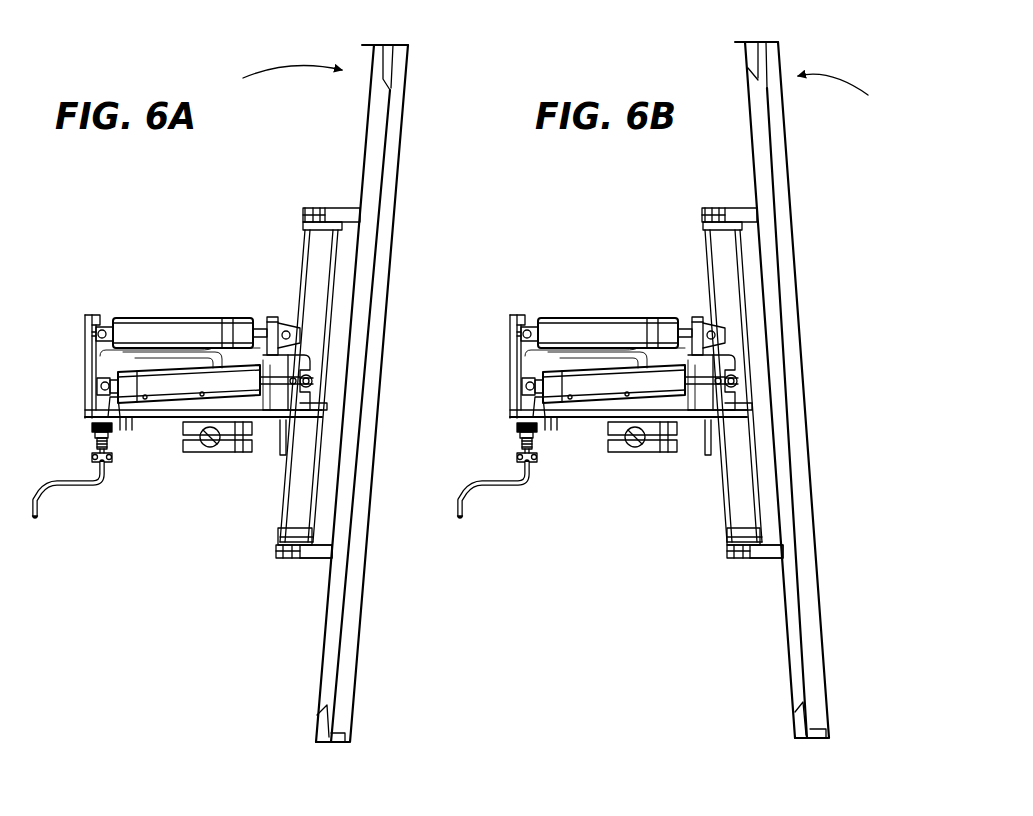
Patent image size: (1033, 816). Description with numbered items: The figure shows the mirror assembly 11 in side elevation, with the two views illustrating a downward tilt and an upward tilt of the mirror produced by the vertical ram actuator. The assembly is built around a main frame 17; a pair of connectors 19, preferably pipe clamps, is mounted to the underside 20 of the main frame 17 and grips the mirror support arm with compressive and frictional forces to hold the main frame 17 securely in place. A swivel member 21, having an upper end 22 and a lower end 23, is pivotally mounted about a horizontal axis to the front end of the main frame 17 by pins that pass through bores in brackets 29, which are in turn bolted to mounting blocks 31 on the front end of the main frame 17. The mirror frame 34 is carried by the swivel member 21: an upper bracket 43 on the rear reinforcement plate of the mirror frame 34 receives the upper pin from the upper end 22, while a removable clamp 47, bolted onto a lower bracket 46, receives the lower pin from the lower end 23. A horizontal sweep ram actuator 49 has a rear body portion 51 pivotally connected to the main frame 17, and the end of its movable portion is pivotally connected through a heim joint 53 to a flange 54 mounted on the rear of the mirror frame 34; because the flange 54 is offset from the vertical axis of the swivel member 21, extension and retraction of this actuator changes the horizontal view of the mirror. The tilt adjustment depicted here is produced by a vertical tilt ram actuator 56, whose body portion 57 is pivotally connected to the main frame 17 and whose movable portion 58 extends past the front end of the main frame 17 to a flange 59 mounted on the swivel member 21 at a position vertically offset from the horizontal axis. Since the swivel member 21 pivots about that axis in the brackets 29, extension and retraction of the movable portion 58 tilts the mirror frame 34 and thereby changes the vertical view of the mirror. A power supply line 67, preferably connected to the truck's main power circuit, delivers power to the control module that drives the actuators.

In FIG. 6A, the mirror assembly 11 is at (437, 60).
In FIG. 6B, the mirror assembly 11 is at (808, 213).
In FIG. 6A, the main frame 17 is at (83, 347).
In FIG. 6B, the main frame 17 is at (600, 366).
In FIG. 6A, the connectors 19 is at (205, 450).
In FIG. 6B, the connectors 19 is at (639, 463).
In FIG. 6A, the underside 20 is at (128, 421).
In FIG. 6B, the underside 20 is at (541, 446).
In FIG. 6A, the swivel member 21 is at (300, 250).
In FIG. 6B, the swivel member 21 is at (700, 250).
In FIG. 6A, the upper end 22 is at (302, 220).
In FIG. 6B, the upper end 22 is at (702, 220).
In FIG. 6A, the lower end 23 is at (278, 533).
In FIG. 6B, the lower end 23 is at (726, 533).
In FIG. 6A, the brackets 29 is at (305, 408).
In FIG. 6B, the brackets 29 is at (767, 393).
In FIG. 6A, the mounting blocks 31 is at (282, 456).
In FIG. 6B, the mounting blocks 31 is at (694, 462).
In FIG. 6A, the mirror frame 34 is at (376, 667).
In FIG. 6B, the mirror frame 34 is at (778, 665).
In FIG. 6A, the upper bracket 43 is at (335, 207).
In FIG. 6B, the upper bracket 43 is at (727, 207).
In FIG. 6A, the lower bracket 46 is at (322, 560).
In FIG. 6B, the lower bracket 46 is at (772, 560).
In FIG. 6A, the removable clamp 47 is at (285, 559).
In FIG. 6B, the removable clamp 47 is at (735, 559).
In FIG. 6A, the horizontal sweep ram actuator 49 is at (180, 413).
In FIG. 6B, the horizontal sweep ram actuator 49 is at (575, 442).
In FIG. 6A, the rear body portion 51 is at (100, 392).
In FIG. 6B, the rear body portion 51 is at (594, 392).
In FIG. 6A, the heim joint 53 is at (300, 347).
In FIG. 6B, the heim joint 53 is at (787, 352).
In FIG. 6A, the flange 54 is at (315, 380).
In FIG. 6B, the flange 54 is at (790, 375).
In FIG. 6A, the vertical tilt ram actuator 56 is at (158, 316).
In FIG. 6B, the vertical tilt ram actuator 56 is at (615, 300).
In FIG. 6A, the body portion 57 is at (134, 318).
In FIG. 6B, the body portion 57 is at (542, 302).
In FIG. 6A, the movable portion 58 is at (268, 322).
In FIG. 6B, the movable portion 58 is at (669, 309).
In FIG. 6A, the flange 59 is at (282, 318).
In FIG. 6B, the flange 59 is at (701, 305).
In FIG. 6A, the power supply line 67 is at (85, 486).
In FIG. 6B, the power supply line 67 is at (493, 501).